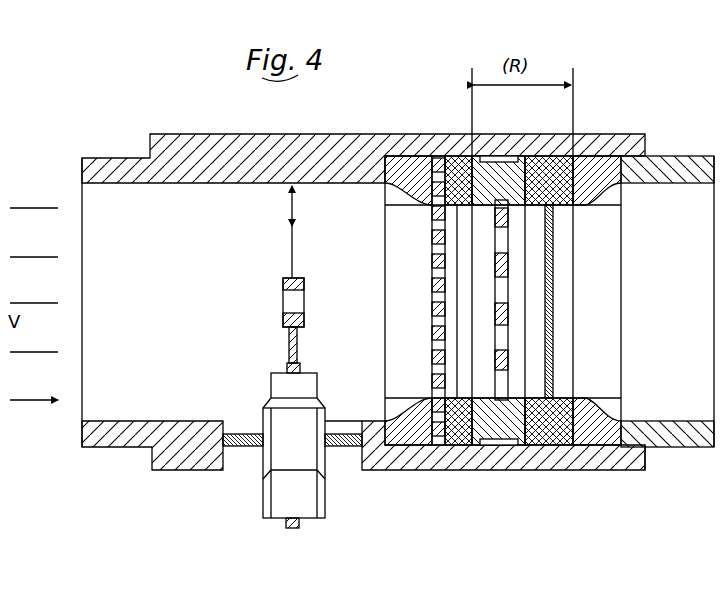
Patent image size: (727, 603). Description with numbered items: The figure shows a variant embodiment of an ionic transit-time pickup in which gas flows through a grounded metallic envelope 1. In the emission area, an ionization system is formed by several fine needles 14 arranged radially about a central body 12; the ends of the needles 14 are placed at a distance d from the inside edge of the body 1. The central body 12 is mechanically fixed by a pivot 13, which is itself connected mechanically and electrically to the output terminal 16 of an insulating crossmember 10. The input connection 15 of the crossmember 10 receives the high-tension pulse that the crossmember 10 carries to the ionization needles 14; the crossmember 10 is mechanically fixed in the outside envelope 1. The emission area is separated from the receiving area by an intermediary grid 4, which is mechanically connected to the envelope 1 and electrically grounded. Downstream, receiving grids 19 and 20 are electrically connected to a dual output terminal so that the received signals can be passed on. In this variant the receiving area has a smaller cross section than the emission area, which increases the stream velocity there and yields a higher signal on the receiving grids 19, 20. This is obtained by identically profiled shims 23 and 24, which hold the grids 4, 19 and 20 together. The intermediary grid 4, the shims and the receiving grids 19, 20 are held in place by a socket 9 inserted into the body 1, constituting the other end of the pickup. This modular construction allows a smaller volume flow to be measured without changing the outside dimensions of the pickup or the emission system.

The metallic envelope 1 is at (598, 145).
The intermediary grid 4 is at (441, 445).
The socket 9 is at (682, 163).
The insulating crossmember 10 is at (267, 505).
The central body 12 is at (283, 288).
The pivot 13 is at (289, 347).
The fine needles 14 is at (294, 251).
The input connection 15 is at (300, 530).
The output terminal 16 is at (300, 368).
The receiving grid 19 is at (508, 400).
The receiving grid 20 is at (555, 395).
The shim 23 is at (420, 443).
The shim 24 is at (593, 435).